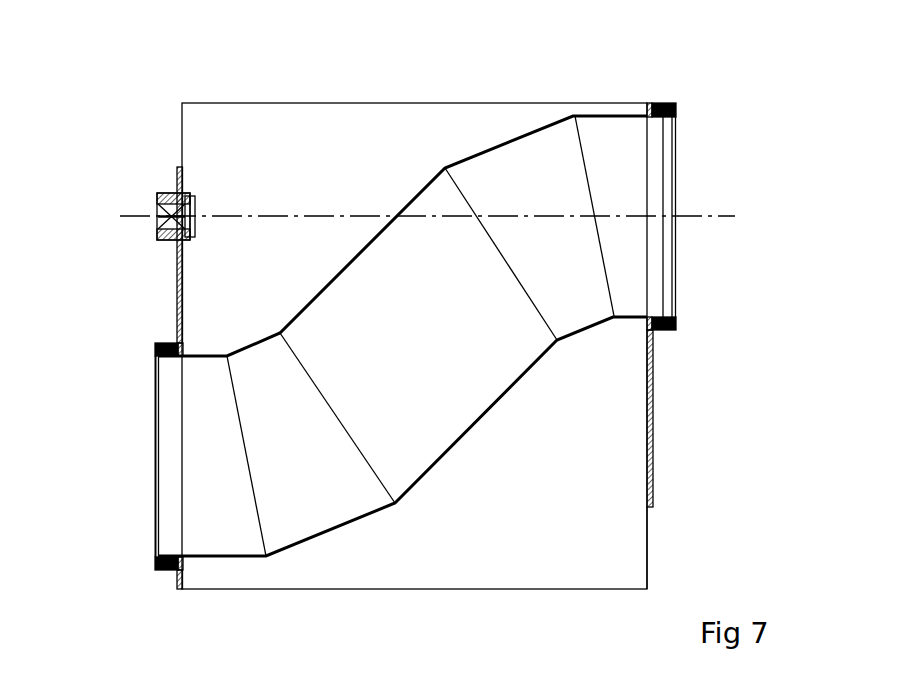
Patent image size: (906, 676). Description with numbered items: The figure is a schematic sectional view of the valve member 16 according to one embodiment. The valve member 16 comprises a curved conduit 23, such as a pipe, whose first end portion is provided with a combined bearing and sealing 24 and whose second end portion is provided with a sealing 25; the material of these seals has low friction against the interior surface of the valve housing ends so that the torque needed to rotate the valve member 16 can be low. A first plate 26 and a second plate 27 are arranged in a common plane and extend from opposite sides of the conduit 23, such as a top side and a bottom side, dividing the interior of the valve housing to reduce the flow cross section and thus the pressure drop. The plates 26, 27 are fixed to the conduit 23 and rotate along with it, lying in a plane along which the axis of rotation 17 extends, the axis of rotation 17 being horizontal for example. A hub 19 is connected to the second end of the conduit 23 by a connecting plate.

The valve member 16 is at (331, 80).
The axis of rotation 17 is at (427, 203).
The hub 19 is at (162, 193).
The curved conduit 23 is at (532, 128).
The combined bearing and sealing 24 is at (670, 102).
The sealing 25 is at (155, 565).
The first plate 26 is at (225, 112).
The second plate 27 is at (625, 517).